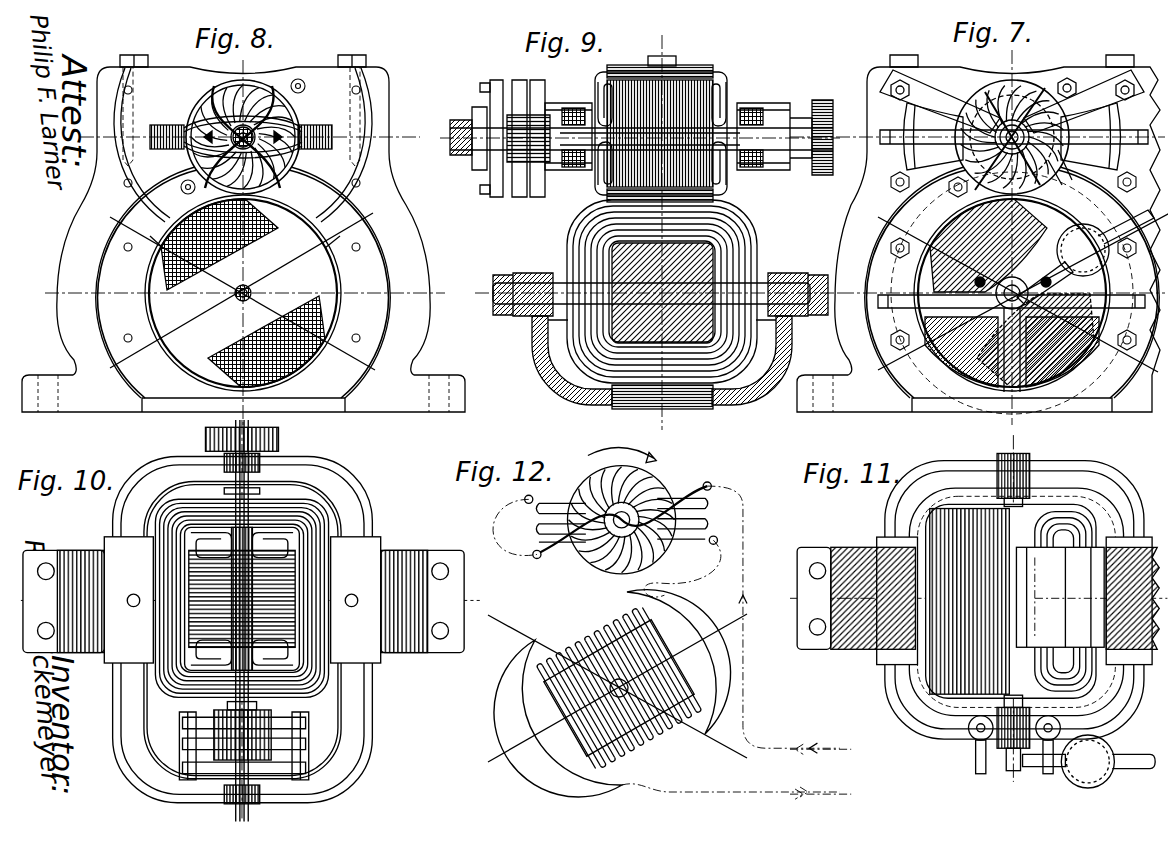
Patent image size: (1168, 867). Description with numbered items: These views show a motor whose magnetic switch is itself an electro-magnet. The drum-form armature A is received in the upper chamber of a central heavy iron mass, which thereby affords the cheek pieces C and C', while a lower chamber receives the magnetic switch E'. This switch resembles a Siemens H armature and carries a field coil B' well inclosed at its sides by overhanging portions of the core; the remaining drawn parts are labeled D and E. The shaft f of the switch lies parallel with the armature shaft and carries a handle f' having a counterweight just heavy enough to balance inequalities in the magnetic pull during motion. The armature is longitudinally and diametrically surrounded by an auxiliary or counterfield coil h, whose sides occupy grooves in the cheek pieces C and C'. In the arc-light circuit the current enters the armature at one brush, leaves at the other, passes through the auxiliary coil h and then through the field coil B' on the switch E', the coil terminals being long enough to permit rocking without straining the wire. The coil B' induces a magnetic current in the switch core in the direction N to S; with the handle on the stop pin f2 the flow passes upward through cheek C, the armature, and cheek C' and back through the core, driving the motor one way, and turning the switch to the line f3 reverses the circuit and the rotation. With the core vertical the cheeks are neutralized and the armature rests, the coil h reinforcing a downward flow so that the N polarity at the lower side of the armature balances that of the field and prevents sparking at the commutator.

In FIG. 8, the armature A is at (243, 137).
In FIG. 9, the armature A is at (661, 133).
In FIG. 7, the armature A is at (1020, 90).
In FIG. 10, the armature A is at (242, 598).
In FIG. 12, the armature A is at (622, 511).
In FIG. 8, the field coil B' is at (266, 341).
In FIG. 9, the field coil B' is at (662, 382).
In FIG. 12, the field coil B' is at (558, 703).
In FIG. 11, the field coil B' is at (1011, 601).
In FIG. 8, the cheek piece C is at (142, 145).
In FIG. 9, the cheek piece C is at (683, 64).
In FIG. 7, the cheek piece C is at (940, 101).
In FIG. 10, the cheek piece C is at (88, 600).
In FIG. 11, the cheek piece C is at (857, 601).
In FIG. 8, the cheek piece C' is at (344, 145).
In FIG. 7, the cheek piece C' is at (1084, 101).
In FIG. 10, the cheek piece C' is at (398, 600).
In FIG. 11, the cheek piece C' is at (1132, 601).
In FIG. 7, the field magnet core D is at (1012, 293).
In FIG. 12, the field magnet core D is at (619, 687).
In FIG. 7, the field magnet winding E is at (1012, 352).
In FIG. 8, the magnetic switch E' is at (229, 244).
In FIG. 9, the magnetic switch E' is at (672, 291).
In FIG. 12, the magnetic switch E' is at (679, 662).
In FIG. 11, the magnetic switch E' is at (1060, 597).
In FIG. 8, the shaft f is at (260, 285).
In FIG. 9, the shaft f is at (660, 294).
In FIG. 7, the shaft f is at (1023, 264).
In FIG. 11, the shaft f is at (1012, 770).
In FIG. 7, the handle f' is at (1092, 257).
In FIG. 11, the handle f' is at (1089, 768).
In FIG. 8, the stop pin f2 is at (340, 236).
In FIG. 7, the stop pin f2 is at (1050, 286).
In FIG. 12, the stop pin f2 is at (617, 687).
In FIG. 11, the stop pin f2 is at (1044, 768).
In FIG. 8, the line f3 is at (150, 236).
In FIG. 7, the line f3 is at (975, 286).
In FIG. 12, the line f3 is at (617, 686).
In FIG. 11, the line f3 is at (971, 748).
In FIG. 8, the auxiliary field coil h is at (241, 127).
In FIG. 9, the auxiliary field coil h is at (757, 95).
In FIG. 7, the auxiliary field coil h is at (1060, 176).
In FIG. 10, the auxiliary field coil h is at (276, 598).
In FIG. 12, the auxiliary field coil h is at (615, 520).
In FIG. 8, the north polarity N is at (235, 293).
In FIG. 8, the south polarity S is at (246, 279).